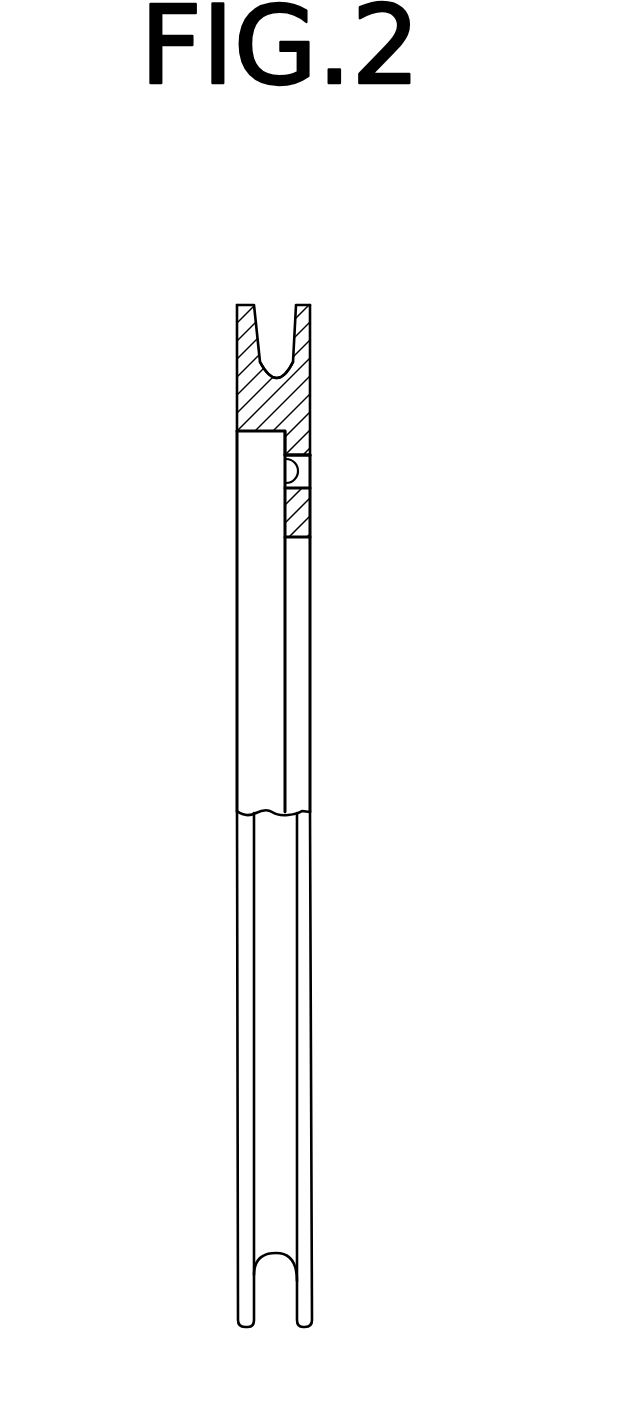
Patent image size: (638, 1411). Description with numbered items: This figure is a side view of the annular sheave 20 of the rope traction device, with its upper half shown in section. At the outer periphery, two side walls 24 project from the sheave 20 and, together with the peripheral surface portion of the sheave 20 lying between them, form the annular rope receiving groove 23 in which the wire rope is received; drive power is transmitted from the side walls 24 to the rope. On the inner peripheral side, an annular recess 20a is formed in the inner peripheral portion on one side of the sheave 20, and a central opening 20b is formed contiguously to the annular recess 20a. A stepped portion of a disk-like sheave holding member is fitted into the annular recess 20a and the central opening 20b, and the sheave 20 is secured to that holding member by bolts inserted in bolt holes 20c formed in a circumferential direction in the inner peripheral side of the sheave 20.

The sheave 20 is at (222, 1004).
The annular recess 20a is at (248, 492).
The central opening 20b is at (298, 692).
The bolt holes 20c is at (297, 472).
The rope receiving groove 23 is at (277, 322).
The side walls 24 is at (243, 310).